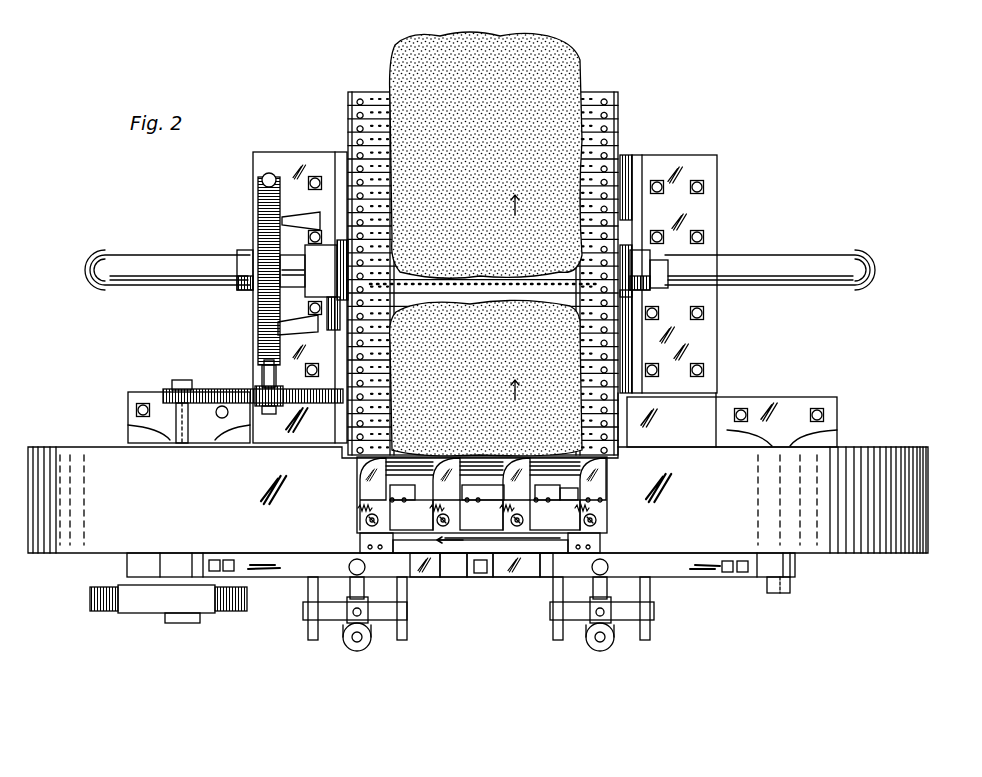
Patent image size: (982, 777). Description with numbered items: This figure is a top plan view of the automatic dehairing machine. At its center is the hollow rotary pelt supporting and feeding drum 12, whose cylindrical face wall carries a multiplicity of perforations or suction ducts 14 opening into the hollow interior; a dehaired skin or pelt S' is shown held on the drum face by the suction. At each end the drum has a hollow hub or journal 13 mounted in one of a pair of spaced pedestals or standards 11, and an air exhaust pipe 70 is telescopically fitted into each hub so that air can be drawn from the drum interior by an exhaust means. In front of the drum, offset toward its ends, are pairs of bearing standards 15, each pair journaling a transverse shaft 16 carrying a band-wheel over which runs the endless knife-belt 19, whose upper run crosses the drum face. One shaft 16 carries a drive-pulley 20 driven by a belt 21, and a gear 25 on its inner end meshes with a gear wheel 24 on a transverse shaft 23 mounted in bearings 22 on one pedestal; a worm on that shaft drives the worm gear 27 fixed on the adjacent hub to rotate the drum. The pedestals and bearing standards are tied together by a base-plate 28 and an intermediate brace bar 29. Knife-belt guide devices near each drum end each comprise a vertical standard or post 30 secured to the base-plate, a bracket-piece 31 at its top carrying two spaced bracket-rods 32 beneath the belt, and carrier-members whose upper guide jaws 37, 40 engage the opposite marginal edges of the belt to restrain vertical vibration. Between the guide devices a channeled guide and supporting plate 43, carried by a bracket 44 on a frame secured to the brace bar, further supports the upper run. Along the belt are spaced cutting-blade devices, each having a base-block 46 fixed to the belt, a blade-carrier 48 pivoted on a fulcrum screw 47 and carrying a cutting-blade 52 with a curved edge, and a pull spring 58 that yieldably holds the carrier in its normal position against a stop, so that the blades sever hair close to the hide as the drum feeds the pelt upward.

The pedestal or standard 11 is at (300, 290).
The pelt or skin supporting and feeding drum 12 is at (618, 112).
The hollow hub or journal 13 is at (237, 258).
The perforations or suction ducts 14 is at (380, 125).
The bearing standard 15 is at (165, 432).
The transverse shaft 16 is at (183, 380).
The endless knife-belt 19 is at (435, 577).
The drive-pulley 20 is at (145, 605).
The belt 21 is at (104, 608).
The bearings 22 is at (310, 212).
The transverse shaft 23 is at (265, 372).
The gear wheel 24 is at (255, 392).
The gear 25 is at (170, 392).
The worm gear 27 is at (262, 208).
The base-plate 28 is at (632, 158).
The intermediate brace bar 29 is at (510, 577).
The vertical standard or post 30 is at (365, 645).
The bracket-piece 31 is at (375, 615).
The bracket-rods 32 is at (306, 597).
The upper guide jaw 37 is at (386, 540).
The upper guide jaw 40 is at (400, 500).
The channeled guide and supporting plate 43 is at (462, 577).
The bracket 44 is at (495, 577).
The base-block 46 is at (470, 520).
The pivot or fulcrum screw 47 is at (460, 530).
The blade-carrier 48 is at (462, 496).
The cutting-blade 52 is at (398, 465).
The pull spring 58 is at (420, 515).
The air exhaust pipe 70 is at (158, 262).
The dehaired skin or pelt S' is at (483, 244).